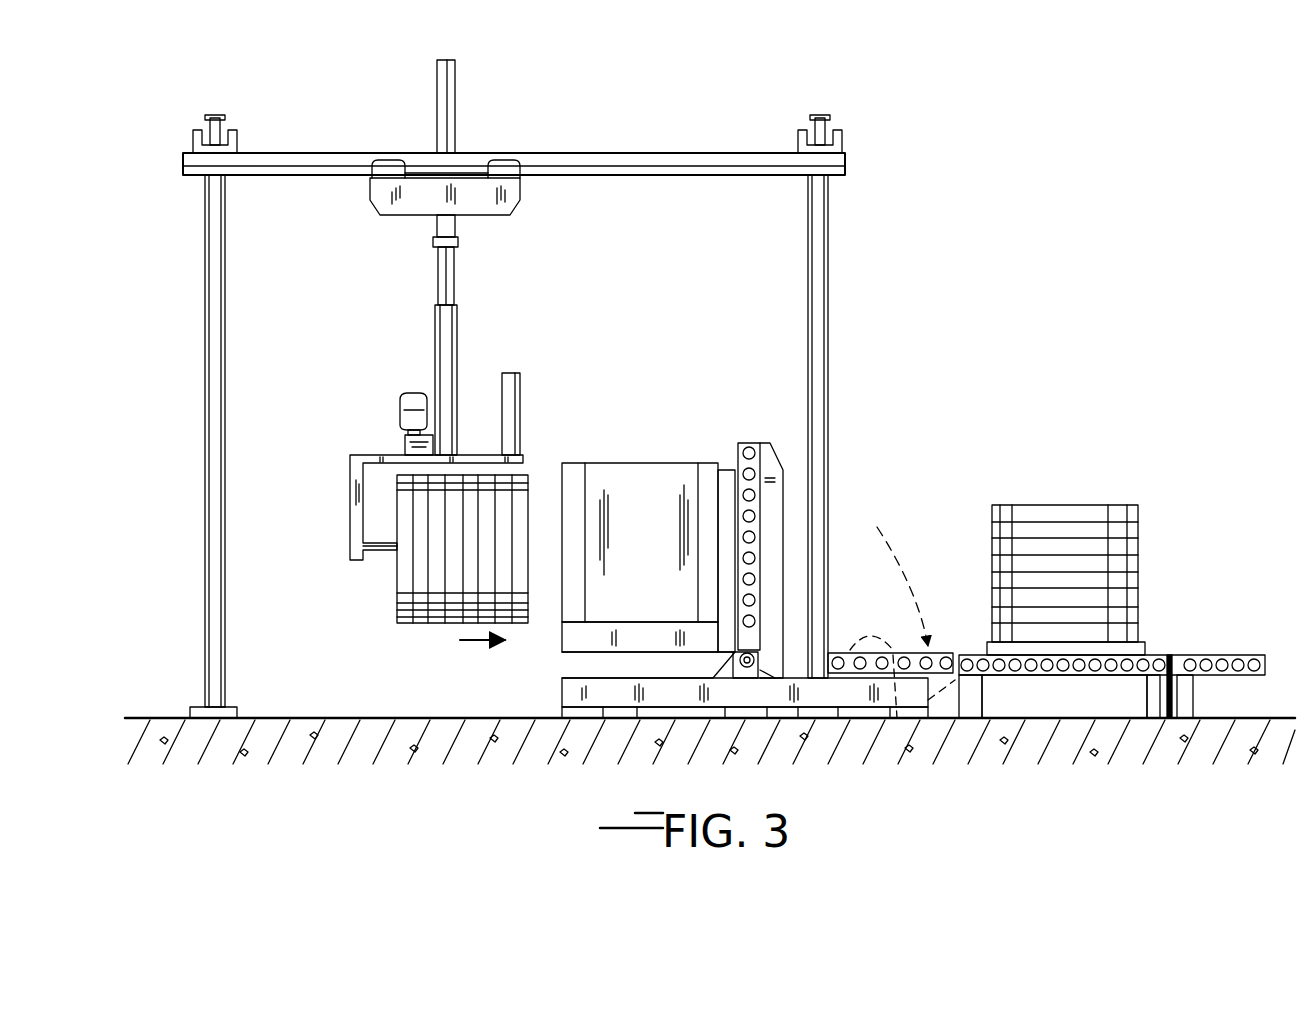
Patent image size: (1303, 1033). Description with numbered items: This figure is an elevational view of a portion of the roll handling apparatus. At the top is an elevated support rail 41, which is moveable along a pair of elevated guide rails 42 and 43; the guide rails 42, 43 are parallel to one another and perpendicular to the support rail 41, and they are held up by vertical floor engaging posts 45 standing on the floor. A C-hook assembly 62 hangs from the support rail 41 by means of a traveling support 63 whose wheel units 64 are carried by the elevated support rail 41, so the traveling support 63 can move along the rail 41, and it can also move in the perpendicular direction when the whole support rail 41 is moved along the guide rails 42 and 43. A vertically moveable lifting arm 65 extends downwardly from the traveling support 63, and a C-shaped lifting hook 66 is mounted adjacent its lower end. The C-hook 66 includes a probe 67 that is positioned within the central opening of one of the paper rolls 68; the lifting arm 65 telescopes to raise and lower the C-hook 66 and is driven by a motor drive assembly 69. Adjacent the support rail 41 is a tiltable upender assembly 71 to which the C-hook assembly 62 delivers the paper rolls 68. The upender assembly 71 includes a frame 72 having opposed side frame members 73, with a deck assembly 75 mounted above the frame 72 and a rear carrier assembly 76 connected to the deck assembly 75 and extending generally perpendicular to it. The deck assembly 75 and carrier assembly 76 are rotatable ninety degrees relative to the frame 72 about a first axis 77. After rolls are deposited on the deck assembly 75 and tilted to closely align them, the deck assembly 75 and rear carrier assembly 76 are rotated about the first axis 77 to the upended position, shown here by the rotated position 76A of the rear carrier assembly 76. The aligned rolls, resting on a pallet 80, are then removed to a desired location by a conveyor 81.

The elevated support rail 41 is at (638, 152).
The elevated guide rail 42 is at (215, 113).
The elevated guide rail 43 is at (822, 113).
The vertical floor engaging posts 45 is at (205, 365).
The C-hook assembly 62 is at (458, 268).
The traveling support 63 is at (385, 215).
The wheel units 64 is at (382, 160).
The lifting arm 65 is at (458, 325).
The C-shaped lifting hook 66 is at (390, 534).
The probe 67 is at (380, 552).
The paper rolls 68 is at (420, 625).
The motor drive assembly 69 is at (392, 413).
The tiltable upender assembly 71 is at (552, 691).
The frame 72 is at (628, 714).
The side frame members 73 is at (766, 706).
The deck assembly 75 is at (605, 620).
The rear carrier assembly 76 is at (737, 458).
The rotated position of rear carrier assembly 76A is at (902, 666).
The first axis 77 is at (752, 654).
The pallet 80 is at (1148, 653).
The conveyor 81 is at (1205, 655).